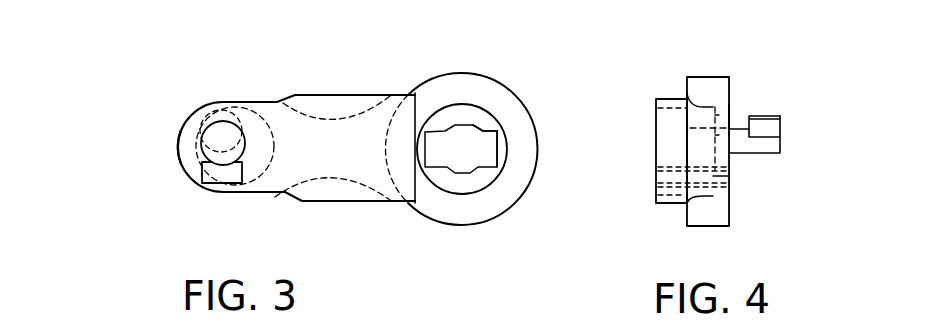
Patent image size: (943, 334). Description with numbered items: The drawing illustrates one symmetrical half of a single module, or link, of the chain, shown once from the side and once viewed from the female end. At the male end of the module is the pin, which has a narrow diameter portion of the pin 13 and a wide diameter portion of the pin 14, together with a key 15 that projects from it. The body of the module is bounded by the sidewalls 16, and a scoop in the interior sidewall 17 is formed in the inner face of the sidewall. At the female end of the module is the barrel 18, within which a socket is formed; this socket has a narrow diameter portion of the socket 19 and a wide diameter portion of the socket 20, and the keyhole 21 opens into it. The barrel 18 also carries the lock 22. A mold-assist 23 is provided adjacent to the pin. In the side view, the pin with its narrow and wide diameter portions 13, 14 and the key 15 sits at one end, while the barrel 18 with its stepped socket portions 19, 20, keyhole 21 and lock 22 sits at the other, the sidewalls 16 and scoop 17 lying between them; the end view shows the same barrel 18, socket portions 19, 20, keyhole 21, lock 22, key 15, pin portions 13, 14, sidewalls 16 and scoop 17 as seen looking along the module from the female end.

In FIG. 3, the narrow diameter portion of the pin 13 is at (197, 137).
In FIG. 4, the narrow diameter portion of the pin 13 is at (781, 153).
In FIG. 3, the wide diameter portion of the pin 14 is at (180, 147).
In FIG. 4, the wide diameter portion of the pin 14 is at (704, 105).
In FIG. 3, the key 15 is at (202, 108).
In FIG. 4, the key 15 is at (781, 121).
In FIG. 4, the sidewalls 16 is at (656, 204).
In FIG. 3, the scoop in the interior sidewall 17 is at (303, 194).
In FIG. 4, the scoop in the interior sidewall 17 is at (682, 120).
In FIG. 3, the barrel 18 is at (531, 181).
In FIG. 4, the barrel 18 is at (700, 77).
In FIG. 3, the narrow diameter portion of the socket 19 is at (457, 171).
In FIG. 4, the narrow diameter portion of the socket 19 is at (722, 126).
In FIG. 3, the wide diameter portion of the socket 20 is at (508, 140).
In FIG. 4, the wide diameter portion of the socket 20 is at (709, 197).
In FIG. 3, the keyhole 21 is at (501, 131).
In FIG. 4, the keyhole 21 is at (731, 120).
In FIG. 3, the lock 22 is at (471, 114).
In FIG. 4, the lock 22 is at (716, 182).
In FIG. 3, the mold-assist 23 is at (201, 172).